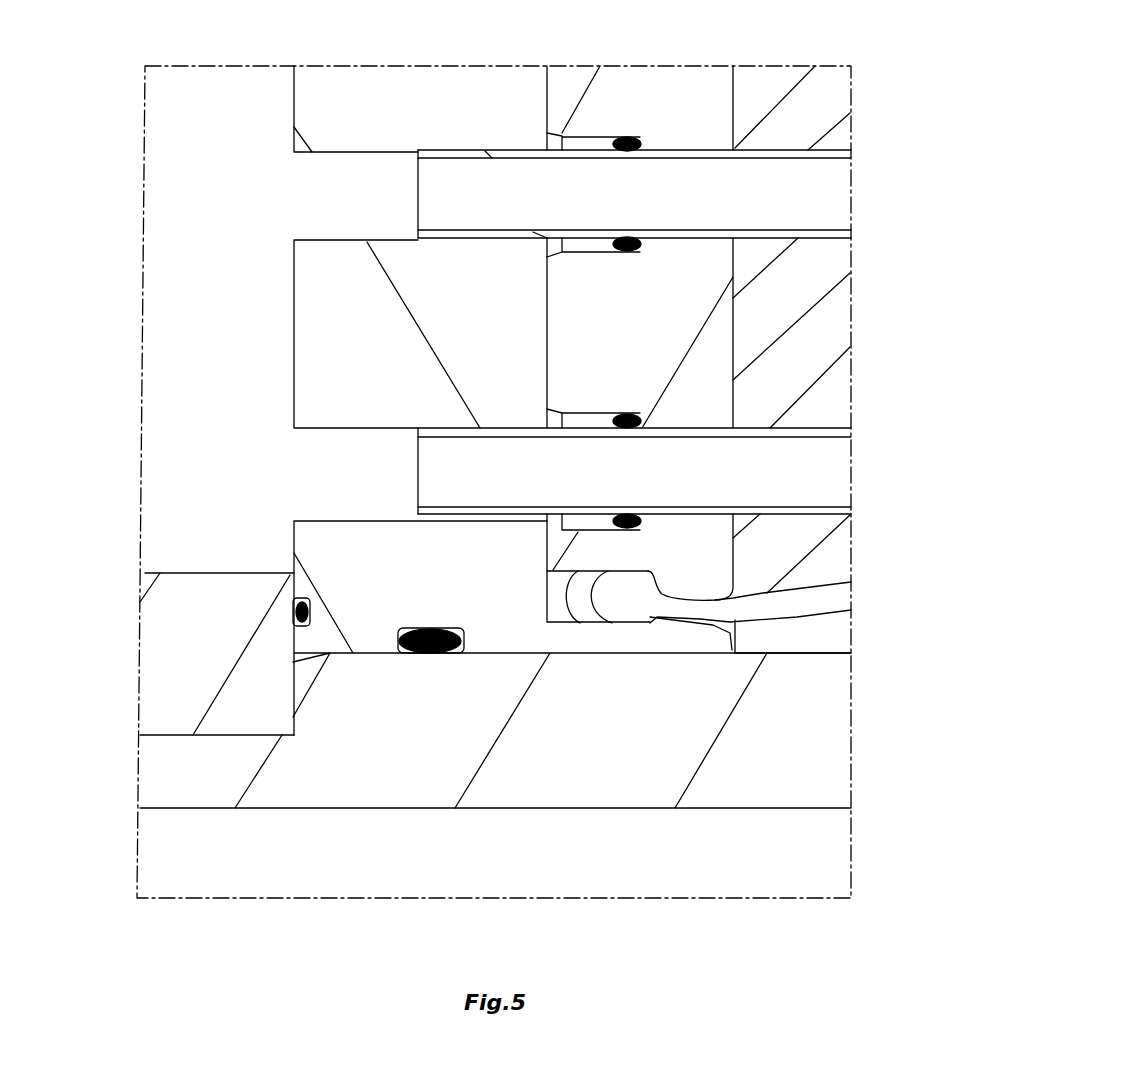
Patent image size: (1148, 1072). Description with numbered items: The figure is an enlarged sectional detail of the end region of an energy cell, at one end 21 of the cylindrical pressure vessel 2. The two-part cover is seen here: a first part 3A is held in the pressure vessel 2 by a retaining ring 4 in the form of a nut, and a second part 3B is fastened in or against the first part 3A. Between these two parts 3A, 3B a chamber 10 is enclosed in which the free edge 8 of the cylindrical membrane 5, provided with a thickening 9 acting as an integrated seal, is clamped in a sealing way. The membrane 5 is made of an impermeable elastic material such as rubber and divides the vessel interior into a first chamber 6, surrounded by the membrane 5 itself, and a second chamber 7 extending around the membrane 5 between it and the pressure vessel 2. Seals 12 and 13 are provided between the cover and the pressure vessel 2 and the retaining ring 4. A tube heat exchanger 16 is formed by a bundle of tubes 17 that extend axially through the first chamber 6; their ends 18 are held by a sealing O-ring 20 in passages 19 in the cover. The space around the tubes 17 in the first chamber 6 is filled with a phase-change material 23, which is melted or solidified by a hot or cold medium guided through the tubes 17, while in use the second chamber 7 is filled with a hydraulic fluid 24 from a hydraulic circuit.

The pressure vessel 2 is at (755, 725).
The first part of the cover 3A is at (340, 653).
The second part of the cover 3B is at (700, 547).
The retaining ring 4 is at (153, 638).
The membrane 5 is at (837, 602).
The first chamber 6 is at (820, 265).
The second chamber 7 is at (790, 632).
The free edge 8 is at (803, 610).
The thickening 9 is at (627, 608).
The chamber 10 is at (587, 598).
The seal 12 is at (420, 653).
The seal 13 is at (293, 610).
The tube heat exchanger 16 is at (778, 55).
The tubes 17 is at (793, 198).
The ends of the tubes 18 is at (418, 192).
The passages 19 is at (697, 150).
The sealing O-ring 20 is at (627, 138).
The end of the pressure vessel 21 is at (178, 378).
The phase-change material 23 is at (820, 310).
The hydraulic fluid 24 is at (770, 638).